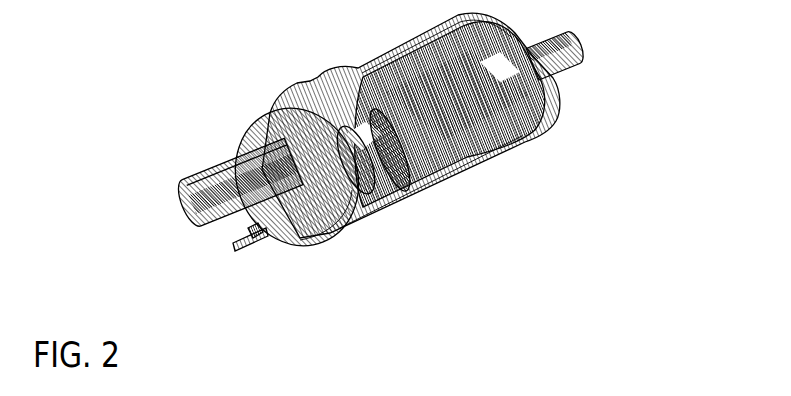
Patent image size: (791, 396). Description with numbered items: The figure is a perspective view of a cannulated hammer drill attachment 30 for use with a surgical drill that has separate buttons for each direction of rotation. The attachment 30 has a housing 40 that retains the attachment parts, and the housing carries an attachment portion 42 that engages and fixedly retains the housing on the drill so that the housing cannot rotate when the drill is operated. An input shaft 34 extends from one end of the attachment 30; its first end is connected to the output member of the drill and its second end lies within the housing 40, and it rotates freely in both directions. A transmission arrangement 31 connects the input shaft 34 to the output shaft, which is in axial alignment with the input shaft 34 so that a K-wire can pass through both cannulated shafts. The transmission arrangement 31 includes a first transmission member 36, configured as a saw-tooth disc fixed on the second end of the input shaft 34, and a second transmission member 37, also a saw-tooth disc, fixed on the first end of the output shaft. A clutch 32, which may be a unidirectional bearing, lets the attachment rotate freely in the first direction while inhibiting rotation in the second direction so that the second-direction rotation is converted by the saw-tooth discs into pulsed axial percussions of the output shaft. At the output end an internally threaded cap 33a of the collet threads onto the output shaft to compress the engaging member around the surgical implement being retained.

The hammer drill attachment 30 is at (216, 96).
The transmission arrangement 31 is at (411, 125).
The clutch 32 is at (517, 197).
The internally threaded cap 33a is at (573, 63).
The input shaft 34 is at (200, 230).
The first transmission member 36 is at (373, 177).
The second transmission member 37 is at (393, 167).
The housing 40 is at (335, 227).
The attachment portion 42 is at (252, 233).